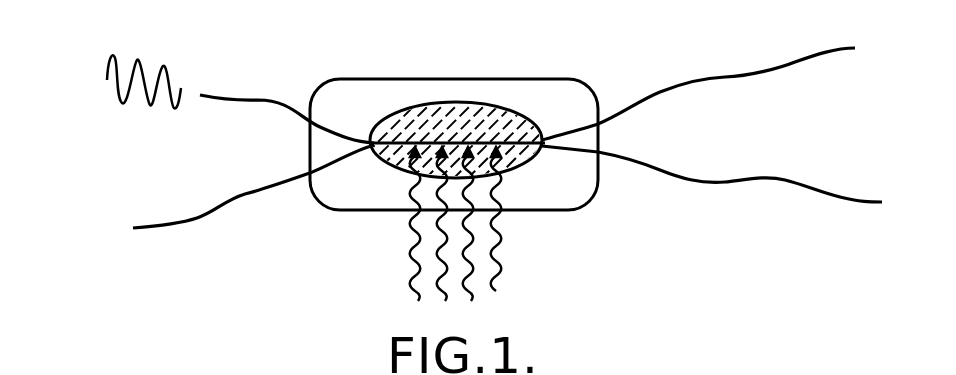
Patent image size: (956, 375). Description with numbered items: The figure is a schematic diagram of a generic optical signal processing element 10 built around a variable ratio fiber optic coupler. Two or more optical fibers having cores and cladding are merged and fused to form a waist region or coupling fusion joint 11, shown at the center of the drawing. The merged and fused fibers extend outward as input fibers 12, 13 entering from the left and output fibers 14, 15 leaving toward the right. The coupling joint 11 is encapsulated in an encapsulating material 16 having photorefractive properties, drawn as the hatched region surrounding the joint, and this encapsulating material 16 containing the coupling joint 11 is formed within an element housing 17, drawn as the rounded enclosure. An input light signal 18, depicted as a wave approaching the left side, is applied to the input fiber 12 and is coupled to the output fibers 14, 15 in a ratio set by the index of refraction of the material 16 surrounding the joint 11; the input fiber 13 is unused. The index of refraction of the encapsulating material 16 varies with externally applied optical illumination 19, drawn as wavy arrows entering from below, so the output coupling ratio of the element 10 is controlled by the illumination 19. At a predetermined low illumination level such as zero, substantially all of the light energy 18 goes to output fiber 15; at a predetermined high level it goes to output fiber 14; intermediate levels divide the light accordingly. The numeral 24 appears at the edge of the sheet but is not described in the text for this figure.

The optical signal processing element 10 is at (486, 114).
The coupling fusion joint 11 is at (474, 143).
The input fiber 12 is at (258, 100).
The input fiber 13 is at (198, 217).
The output fiber 14 is at (762, 72).
The output fiber 15 is at (793, 182).
The encapsulating material 16 is at (392, 112).
The element housing 17 is at (592, 193).
The input light signal 18 is at (139, 62).
The externally applied optical illumination 19 is at (404, 250).
The optical fiber 24 is at (142, 374).